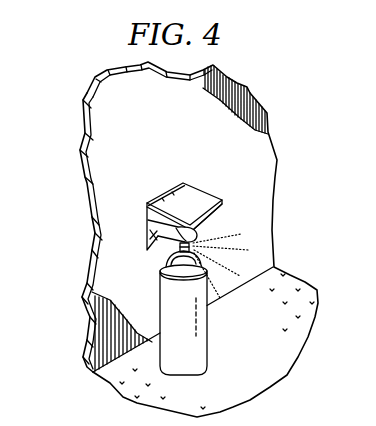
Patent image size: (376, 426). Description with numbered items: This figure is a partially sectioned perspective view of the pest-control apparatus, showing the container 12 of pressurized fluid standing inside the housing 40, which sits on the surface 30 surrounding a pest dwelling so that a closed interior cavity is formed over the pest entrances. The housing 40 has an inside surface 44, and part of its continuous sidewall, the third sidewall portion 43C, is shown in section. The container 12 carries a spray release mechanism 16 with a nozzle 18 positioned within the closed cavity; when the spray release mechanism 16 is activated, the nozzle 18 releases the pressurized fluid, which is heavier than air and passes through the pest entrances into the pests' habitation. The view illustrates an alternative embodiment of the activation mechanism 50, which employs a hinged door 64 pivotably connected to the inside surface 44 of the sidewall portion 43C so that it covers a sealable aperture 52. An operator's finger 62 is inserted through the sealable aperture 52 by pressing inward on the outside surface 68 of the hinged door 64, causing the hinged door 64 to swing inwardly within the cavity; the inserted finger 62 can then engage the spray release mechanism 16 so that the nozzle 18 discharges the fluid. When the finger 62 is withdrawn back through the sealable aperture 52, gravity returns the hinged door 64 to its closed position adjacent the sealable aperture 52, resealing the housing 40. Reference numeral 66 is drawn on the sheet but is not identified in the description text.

The container 12 is at (211, 345).
The spray release mechanism 16 is at (192, 251).
The nozzle 18 is at (198, 266).
The surface 30 is at (297, 343).
The housing 40 is at (84, 183).
The third sidewall portion 43C is at (90, 228).
The inside surface 44 is at (268, 185).
The activation mechanism 50 is at (206, 183).
The sealable aperture 52 is at (158, 245).
The finger 62 is at (152, 221).
The hinged door 64 is at (193, 190).
The top lip 66 is at (165, 191).
The outside surface 68 is at (213, 216).